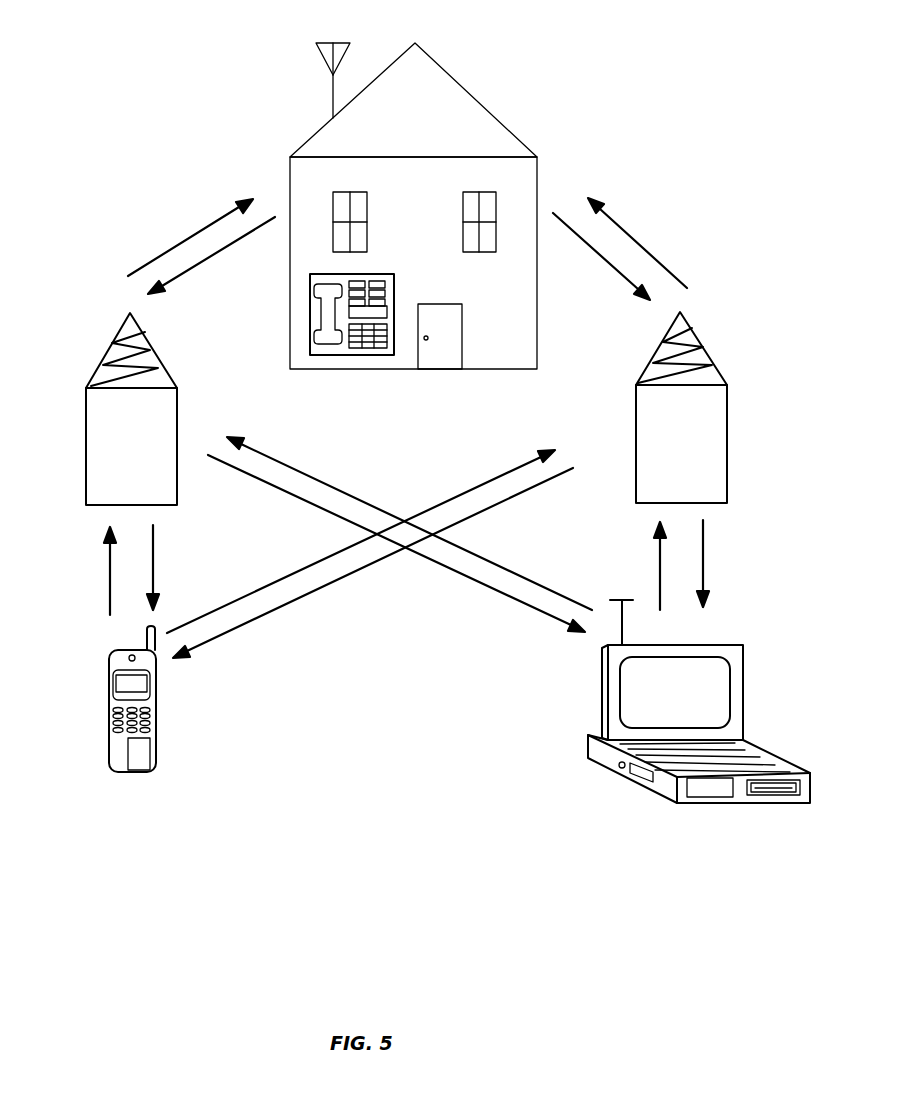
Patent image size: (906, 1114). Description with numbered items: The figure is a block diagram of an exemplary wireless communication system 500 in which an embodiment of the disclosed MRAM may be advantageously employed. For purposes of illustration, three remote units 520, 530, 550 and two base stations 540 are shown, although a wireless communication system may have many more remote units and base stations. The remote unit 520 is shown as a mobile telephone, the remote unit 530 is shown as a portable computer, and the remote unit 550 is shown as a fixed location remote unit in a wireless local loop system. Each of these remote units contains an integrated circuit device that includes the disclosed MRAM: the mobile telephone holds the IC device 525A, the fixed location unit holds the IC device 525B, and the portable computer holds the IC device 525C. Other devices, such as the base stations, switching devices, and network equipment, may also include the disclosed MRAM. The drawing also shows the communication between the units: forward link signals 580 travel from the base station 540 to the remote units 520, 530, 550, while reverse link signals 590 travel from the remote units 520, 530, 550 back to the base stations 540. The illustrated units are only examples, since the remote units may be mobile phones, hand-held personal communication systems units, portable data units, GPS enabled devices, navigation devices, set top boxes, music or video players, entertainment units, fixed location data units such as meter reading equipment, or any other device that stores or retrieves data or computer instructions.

The wireless communication system 500 is at (104, 52).
The remote unit 520 is at (102, 721).
The IC device 525A is at (142, 758).
The IC device 525B is at (373, 358).
The IC device 525C is at (715, 787).
The remote unit 530 is at (699, 725).
The base station 540 is at (110, 348).
The remote unit 550 is at (390, 227).
The forward link signals 580 is at (195, 230).
The reverse link signals 590 is at (200, 268).